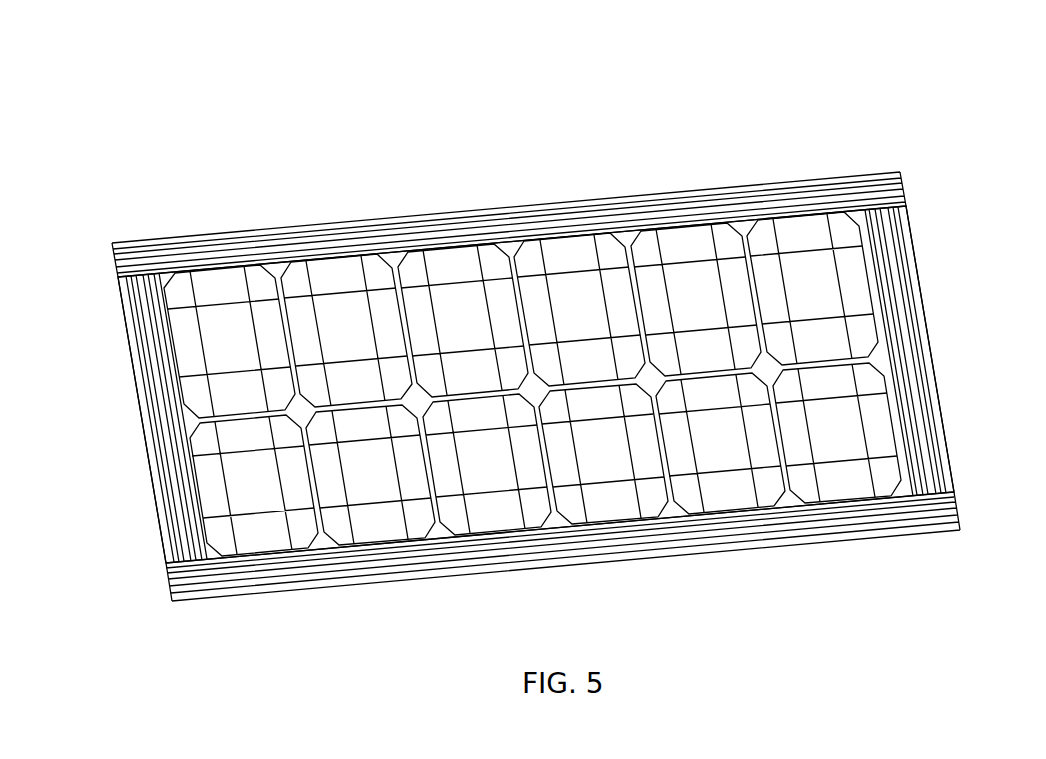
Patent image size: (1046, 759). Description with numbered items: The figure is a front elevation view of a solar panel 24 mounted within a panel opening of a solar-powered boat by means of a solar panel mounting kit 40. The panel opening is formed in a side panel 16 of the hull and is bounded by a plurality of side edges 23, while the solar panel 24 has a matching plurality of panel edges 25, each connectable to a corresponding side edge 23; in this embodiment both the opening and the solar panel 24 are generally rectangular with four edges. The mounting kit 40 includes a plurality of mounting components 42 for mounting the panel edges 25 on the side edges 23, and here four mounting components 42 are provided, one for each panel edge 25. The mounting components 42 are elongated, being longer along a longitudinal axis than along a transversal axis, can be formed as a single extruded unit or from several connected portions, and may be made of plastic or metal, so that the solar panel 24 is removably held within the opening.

The solar panel mounting kit 40 is at (81, 216).
The side panel 16 is at (103, 470).
The side edge 23 is at (233, 597).
The solar panel 24 is at (168, 386).
The panel edge 25 is at (729, 224).
The mounting component 42 is at (913, 397).